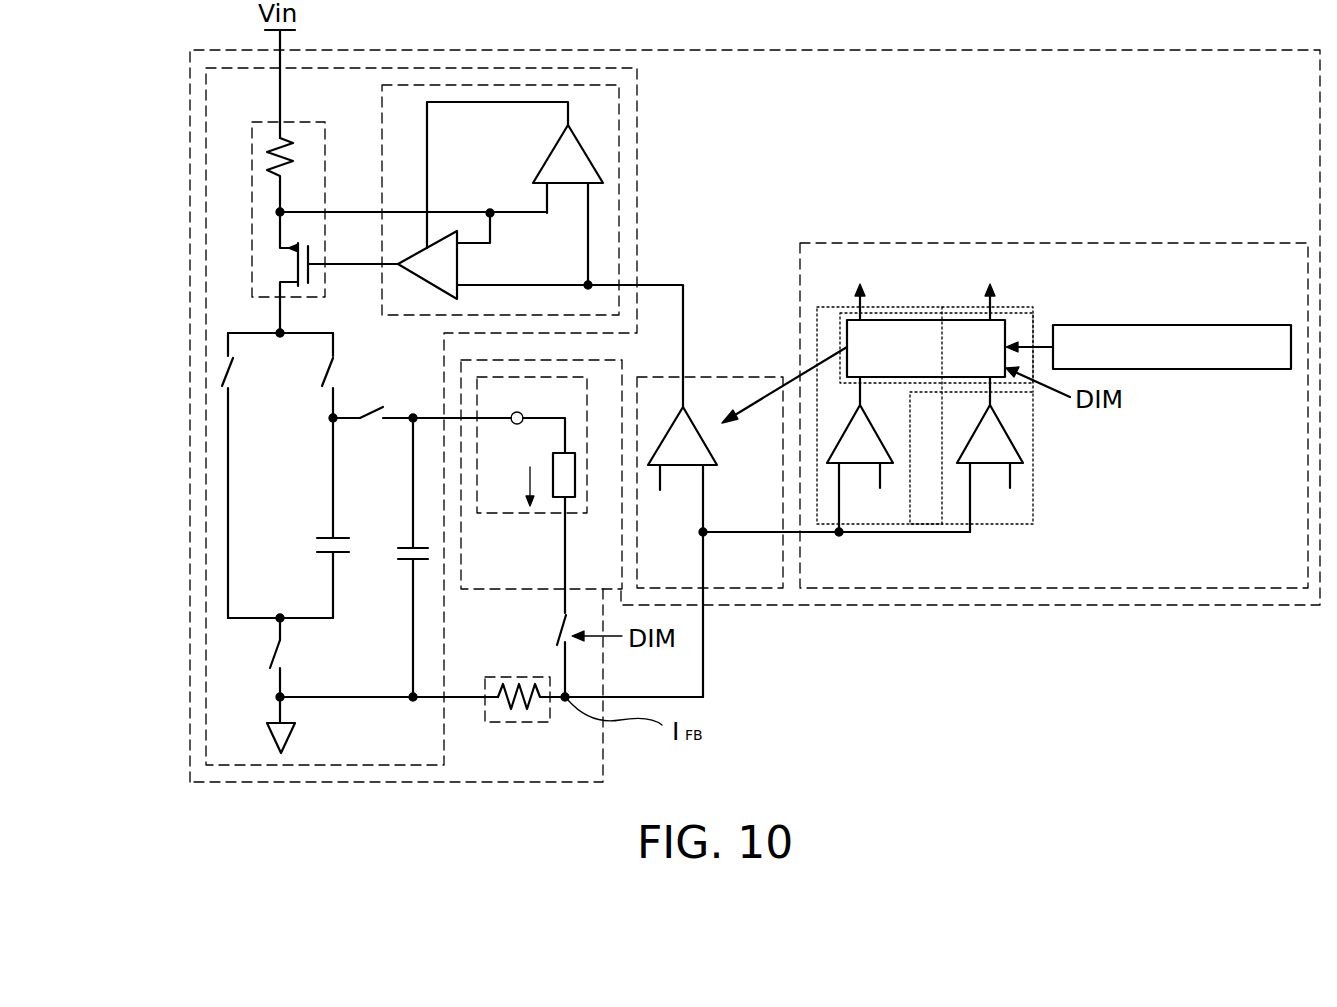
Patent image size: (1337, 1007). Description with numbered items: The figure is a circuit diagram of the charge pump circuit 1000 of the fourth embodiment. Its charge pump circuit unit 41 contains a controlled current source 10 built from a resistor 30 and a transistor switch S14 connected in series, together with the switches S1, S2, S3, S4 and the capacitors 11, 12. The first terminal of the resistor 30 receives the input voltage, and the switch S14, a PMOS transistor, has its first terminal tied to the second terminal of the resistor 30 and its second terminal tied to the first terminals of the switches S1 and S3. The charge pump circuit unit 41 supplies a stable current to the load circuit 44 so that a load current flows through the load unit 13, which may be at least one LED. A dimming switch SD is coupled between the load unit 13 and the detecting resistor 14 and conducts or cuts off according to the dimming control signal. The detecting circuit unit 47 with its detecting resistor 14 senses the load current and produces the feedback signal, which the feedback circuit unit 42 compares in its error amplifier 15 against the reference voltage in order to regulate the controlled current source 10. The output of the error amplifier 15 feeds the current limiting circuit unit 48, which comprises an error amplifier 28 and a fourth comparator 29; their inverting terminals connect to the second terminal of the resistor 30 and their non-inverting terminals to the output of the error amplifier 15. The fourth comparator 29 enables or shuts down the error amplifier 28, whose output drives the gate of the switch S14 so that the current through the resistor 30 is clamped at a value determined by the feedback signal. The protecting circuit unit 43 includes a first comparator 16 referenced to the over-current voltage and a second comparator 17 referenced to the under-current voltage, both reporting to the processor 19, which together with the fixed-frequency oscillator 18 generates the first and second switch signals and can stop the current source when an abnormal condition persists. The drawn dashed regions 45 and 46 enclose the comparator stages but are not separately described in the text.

The charge pump circuit 1000 is at (190, 88).
The charge pump circuit unit 41 is at (637, 143).
The resistor 30 is at (272, 160).
The controlled current source 10 is at (252, 203).
The transistor switch S14 is at (278, 262).
The current limiting circuit unit 48 is at (619, 222).
The fourth comparator 29 is at (548, 150).
The error amplifier 28 is at (457, 263).
The switch S3 is at (246, 475).
The switch S1 is at (310, 375).
The switch S4 is at (420, 433).
The switch S2 is at (296, 657).
The capacitor 11 is at (317, 548).
The load capacitor 12 is at (405, 566).
The load circuit 44 is at (477, 390).
The load unit 13 is at (565, 478).
The dimming switch SD is at (548, 653).
The detecting circuit unit 47 is at (510, 722).
The detecting resistor 14 is at (520, 677).
The feedback circuit unit 42 is at (748, 376).
The error amplifier 15 is at (698, 420).
The protection comparator block 46 is at (1033, 505).
The processor 19 is at (1005, 340).
The oscillator 18 is at (1207, 370).
The protecting circuit unit 43 is at (1112, 325).
The first comparator 16 is at (893, 437).
The comparator block 45 is at (867, 524).
The second comparator 17 is at (1023, 446).